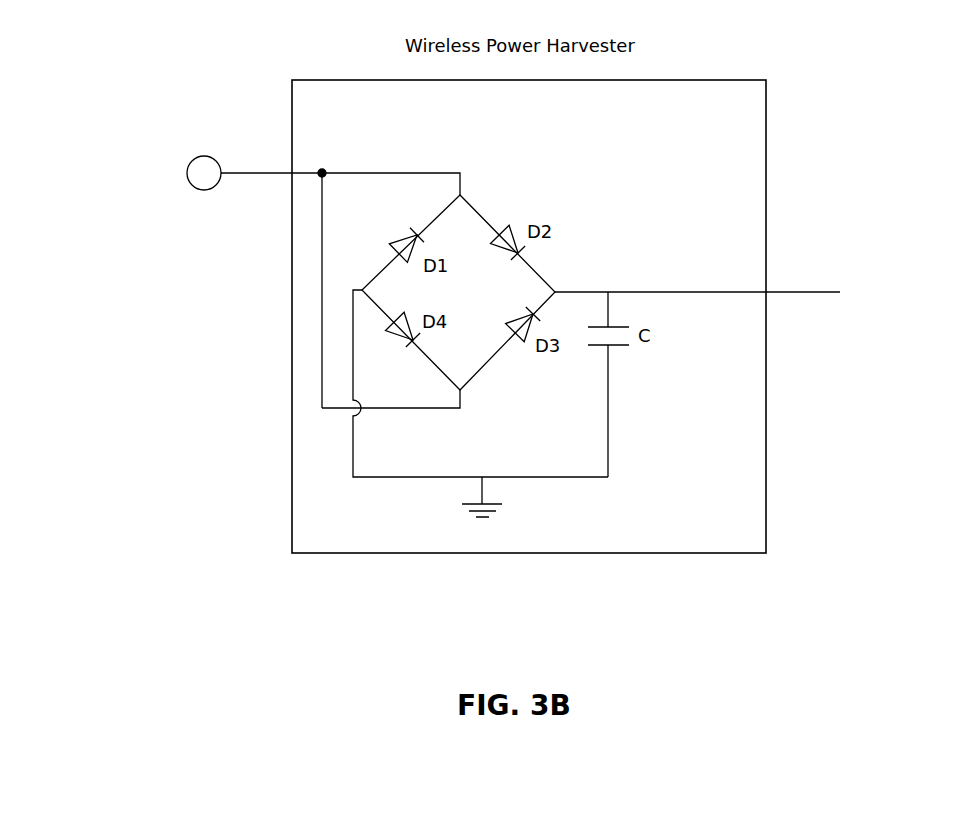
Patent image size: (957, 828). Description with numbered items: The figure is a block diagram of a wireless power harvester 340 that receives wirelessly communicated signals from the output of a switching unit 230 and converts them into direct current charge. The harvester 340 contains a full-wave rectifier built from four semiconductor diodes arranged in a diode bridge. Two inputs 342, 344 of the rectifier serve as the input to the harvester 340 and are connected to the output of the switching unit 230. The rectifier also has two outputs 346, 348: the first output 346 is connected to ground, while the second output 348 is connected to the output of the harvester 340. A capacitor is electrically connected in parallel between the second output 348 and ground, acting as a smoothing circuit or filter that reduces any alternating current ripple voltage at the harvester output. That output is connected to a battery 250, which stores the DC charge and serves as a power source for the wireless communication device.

The wireless power harvester 340 is at (766, 118).
The first input of the full-wave rectifier 342 is at (397, 173).
The second input of the full-wave rectifier 344 is at (435, 408).
The first output of the full-wave rectifier 346 is at (353, 301).
The second output of the full-wave rectifier 348 is at (580, 292).
The switching unit 230 is at (195, 157).
The battery 250 is at (846, 296).